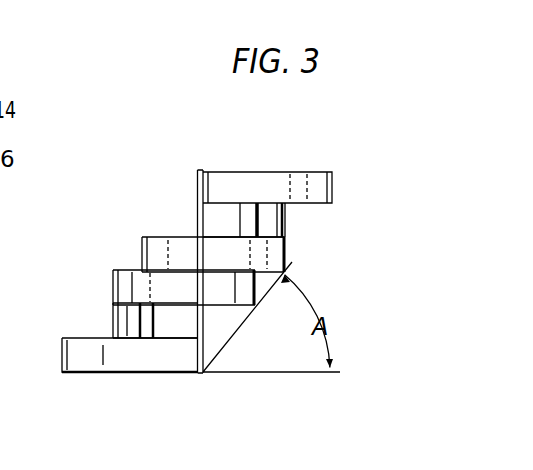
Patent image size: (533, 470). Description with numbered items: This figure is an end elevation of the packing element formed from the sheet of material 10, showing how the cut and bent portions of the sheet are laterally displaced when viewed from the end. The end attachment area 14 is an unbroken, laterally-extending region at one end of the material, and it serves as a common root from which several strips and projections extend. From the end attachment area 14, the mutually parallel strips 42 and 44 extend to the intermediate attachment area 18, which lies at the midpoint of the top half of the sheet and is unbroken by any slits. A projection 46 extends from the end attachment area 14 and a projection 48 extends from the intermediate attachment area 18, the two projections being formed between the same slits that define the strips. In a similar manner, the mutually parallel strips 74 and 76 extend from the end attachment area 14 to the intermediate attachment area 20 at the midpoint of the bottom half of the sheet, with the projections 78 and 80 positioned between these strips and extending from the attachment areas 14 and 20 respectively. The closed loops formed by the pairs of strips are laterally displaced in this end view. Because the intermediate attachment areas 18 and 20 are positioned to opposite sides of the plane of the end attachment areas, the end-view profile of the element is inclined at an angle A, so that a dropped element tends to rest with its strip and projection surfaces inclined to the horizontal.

The sheet of material 10 is at (138, 169).
The end attachment area 14 is at (200, 180).
The intermediate attachment area 18 is at (284, 238).
The intermediate attachment area 20 is at (117, 305).
The strip 42 is at (309, 182).
The strip 44 is at (150, 246).
The projection 46 is at (217, 215).
The projection 48 is at (268, 213).
The strip 74 is at (92, 352).
The strip 76 is at (128, 278).
The projection 78 is at (175, 342).
The projection 80 is at (115, 322).